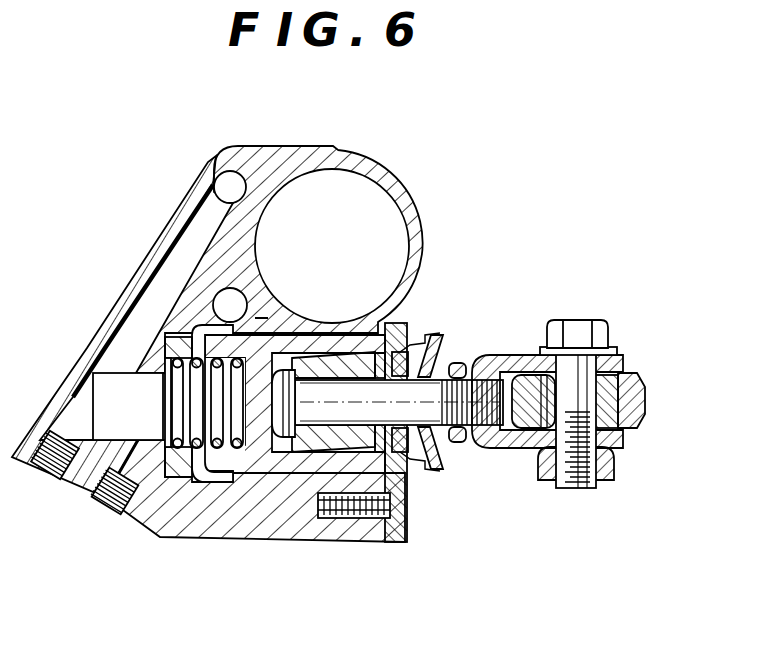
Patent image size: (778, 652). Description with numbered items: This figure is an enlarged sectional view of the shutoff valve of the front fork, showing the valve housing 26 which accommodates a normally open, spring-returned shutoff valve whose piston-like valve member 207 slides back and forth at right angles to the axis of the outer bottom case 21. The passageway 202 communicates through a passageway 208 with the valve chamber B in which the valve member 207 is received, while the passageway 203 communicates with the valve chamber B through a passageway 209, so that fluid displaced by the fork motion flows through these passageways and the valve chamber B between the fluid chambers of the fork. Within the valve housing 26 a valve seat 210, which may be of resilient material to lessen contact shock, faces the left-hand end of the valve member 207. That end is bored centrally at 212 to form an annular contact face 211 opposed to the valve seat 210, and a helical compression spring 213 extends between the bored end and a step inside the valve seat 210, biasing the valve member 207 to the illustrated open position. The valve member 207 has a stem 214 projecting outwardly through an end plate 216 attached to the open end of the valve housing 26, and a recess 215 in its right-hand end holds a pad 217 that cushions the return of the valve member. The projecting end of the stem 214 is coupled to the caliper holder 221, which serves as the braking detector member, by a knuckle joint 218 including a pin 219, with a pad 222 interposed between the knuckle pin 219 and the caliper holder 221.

The bottom case 21 is at (367, 163).
The valve housing 26 is at (255, 476).
The passageway 202 is at (230, 185).
The passageway 203 is at (233, 300).
The valve member 207 is at (207, 497).
The passageway 208 is at (114, 326).
The passageway 209 is at (378, 218).
The valve seat 210 is at (158, 476).
The annular contact face 211 is at (205, 460).
The central bore 212 is at (416, 355).
The helical compression spring 213 is at (89, 356).
The stem 214 is at (547, 325).
The recess 215 is at (338, 485).
The end plate 216 is at (387, 355).
The pad 217 is at (362, 555).
The knuckle joint 218 is at (619, 467).
The pin 219 is at (597, 340).
The caliper holder 221 is at (667, 402).
The pad 222 is at (664, 385).
The valve chamber B is at (83, 506).